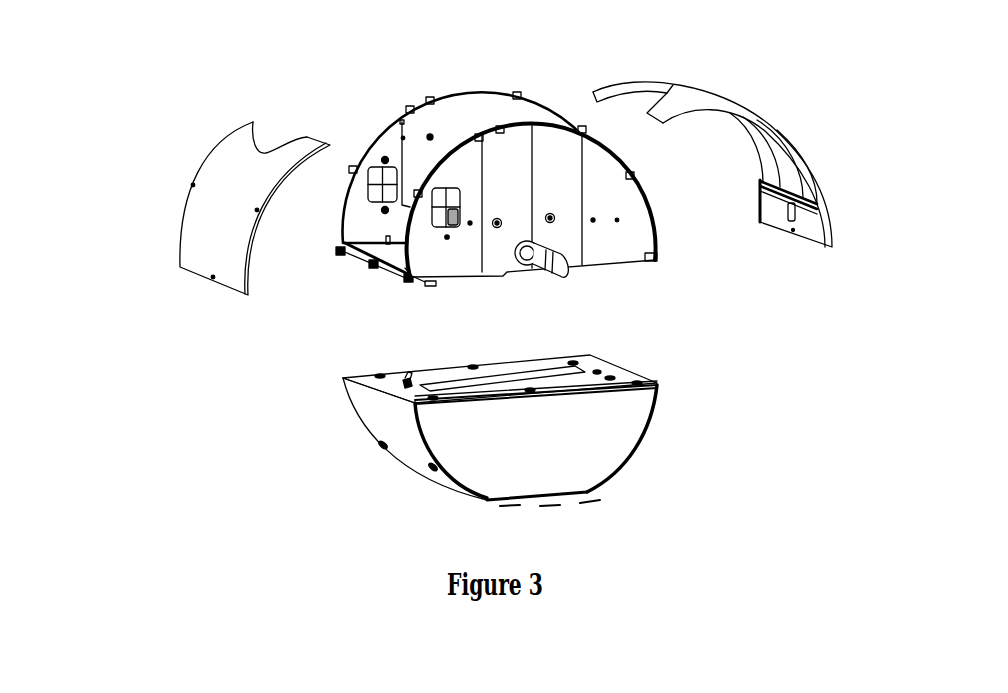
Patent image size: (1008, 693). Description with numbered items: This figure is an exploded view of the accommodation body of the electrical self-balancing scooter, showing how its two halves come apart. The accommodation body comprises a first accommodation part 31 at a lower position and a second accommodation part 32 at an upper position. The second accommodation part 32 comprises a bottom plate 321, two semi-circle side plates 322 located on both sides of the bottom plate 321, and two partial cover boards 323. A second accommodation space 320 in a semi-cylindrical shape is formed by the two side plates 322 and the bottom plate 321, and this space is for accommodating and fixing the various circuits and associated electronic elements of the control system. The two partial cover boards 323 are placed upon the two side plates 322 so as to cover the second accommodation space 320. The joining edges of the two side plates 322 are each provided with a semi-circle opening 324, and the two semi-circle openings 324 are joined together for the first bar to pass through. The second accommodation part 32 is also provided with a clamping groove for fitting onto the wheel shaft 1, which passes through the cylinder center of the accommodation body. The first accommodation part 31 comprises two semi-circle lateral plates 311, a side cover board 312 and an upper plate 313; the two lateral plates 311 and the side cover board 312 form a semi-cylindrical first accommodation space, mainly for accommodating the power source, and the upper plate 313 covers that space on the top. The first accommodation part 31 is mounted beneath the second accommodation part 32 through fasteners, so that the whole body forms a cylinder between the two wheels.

The wheel shaft 1 is at (587, 268).
The first accommodation part 31 is at (511, 409).
The semi-circle lateral plates 311 is at (583, 430).
The side cover board 312 is at (387, 413).
The upper plate 313 is at (610, 373).
The second accommodation part 32 is at (607, 242).
The second accommodation space 320 is at (387, 232).
The bottom plate 321 is at (390, 270).
The semi-circle side plates 322 is at (453, 113).
The partial cover boards 323 is at (217, 183).
The semi-circle opening 324 is at (277, 137).